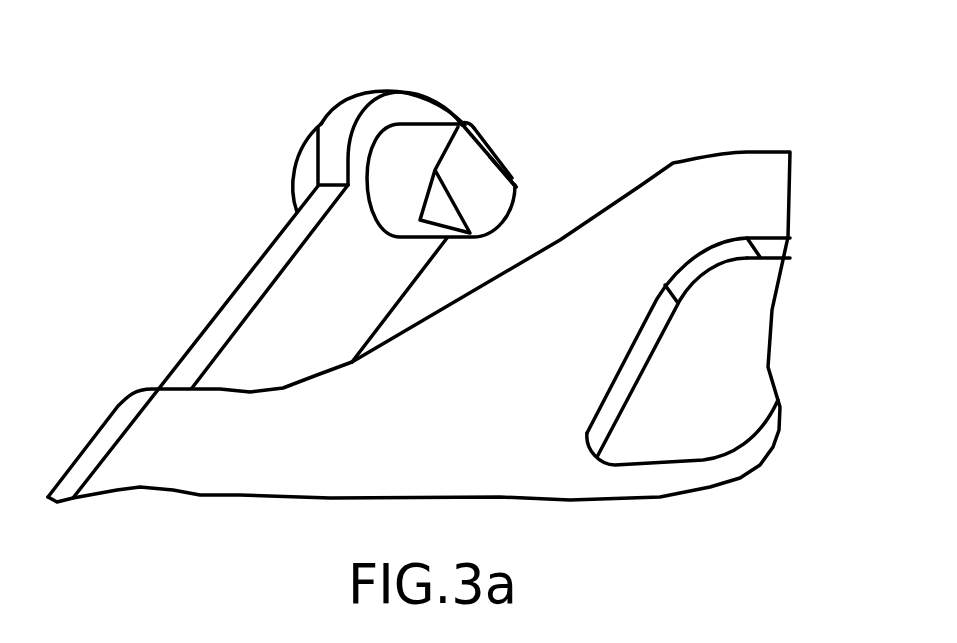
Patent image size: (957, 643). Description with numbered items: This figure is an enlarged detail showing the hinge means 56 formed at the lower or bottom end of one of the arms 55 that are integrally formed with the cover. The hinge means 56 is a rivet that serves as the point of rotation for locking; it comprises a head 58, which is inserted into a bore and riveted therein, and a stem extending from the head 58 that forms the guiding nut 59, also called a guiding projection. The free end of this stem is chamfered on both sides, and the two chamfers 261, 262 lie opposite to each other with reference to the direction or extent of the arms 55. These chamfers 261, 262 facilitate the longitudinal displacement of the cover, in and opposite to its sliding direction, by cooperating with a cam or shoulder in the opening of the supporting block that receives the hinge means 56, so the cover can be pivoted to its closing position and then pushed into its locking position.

The arm 55 is at (290, 307).
The hinge means 56 is at (478, 108).
The head 58 is at (303, 163).
The guiding nut 59 is at (513, 193).
The chamfer 261 is at (432, 203).
The chamfer 262 is at (498, 150).